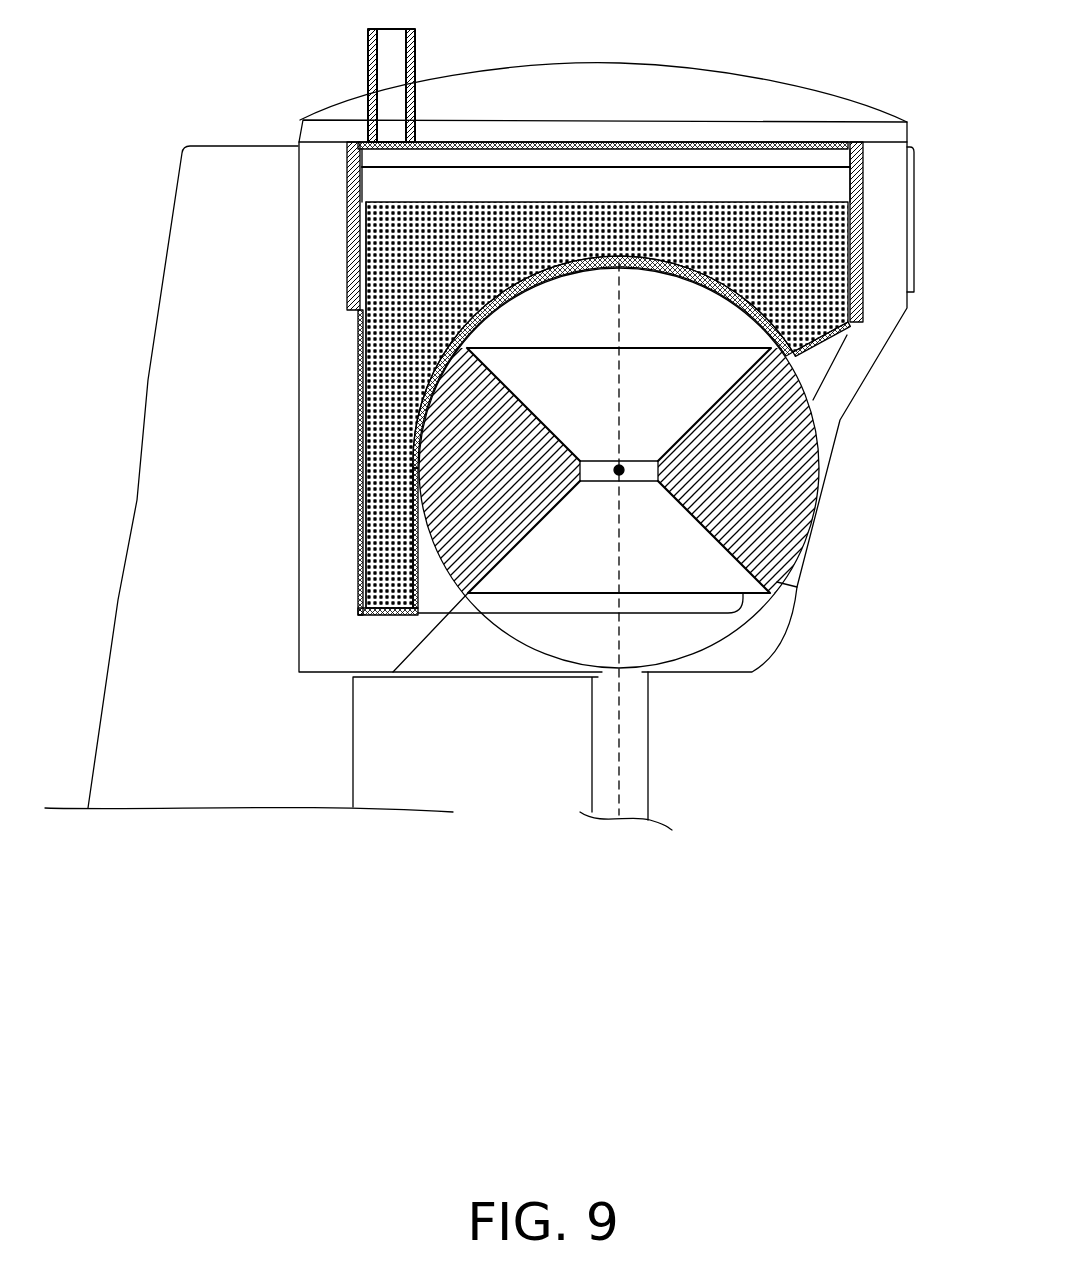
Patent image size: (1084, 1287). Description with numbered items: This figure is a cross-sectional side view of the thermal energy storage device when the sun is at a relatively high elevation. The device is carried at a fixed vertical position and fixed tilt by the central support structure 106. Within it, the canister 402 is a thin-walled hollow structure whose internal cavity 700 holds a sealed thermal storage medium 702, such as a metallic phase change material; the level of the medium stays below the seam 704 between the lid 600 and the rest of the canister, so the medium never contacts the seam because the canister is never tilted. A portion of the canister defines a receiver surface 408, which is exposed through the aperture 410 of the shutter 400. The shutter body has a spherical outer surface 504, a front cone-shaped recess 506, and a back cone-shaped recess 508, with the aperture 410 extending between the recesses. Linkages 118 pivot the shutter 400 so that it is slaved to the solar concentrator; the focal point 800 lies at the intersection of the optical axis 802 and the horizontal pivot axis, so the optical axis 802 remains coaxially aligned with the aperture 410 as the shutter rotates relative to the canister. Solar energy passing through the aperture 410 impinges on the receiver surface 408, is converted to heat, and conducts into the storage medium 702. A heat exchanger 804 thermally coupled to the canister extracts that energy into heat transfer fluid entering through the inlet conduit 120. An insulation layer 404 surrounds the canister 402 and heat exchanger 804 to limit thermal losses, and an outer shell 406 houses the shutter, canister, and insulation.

The central support structure 106 is at (162, 542).
The linkages 118 is at (637, 765).
The inlet conduit 120 is at (368, 55).
The shutter 400 is at (620, 468).
The canister 402 is at (362, 606).
The insulation layer 404 is at (838, 396).
The outer shell 406 is at (915, 212).
The receiver surface 408 is at (508, 292).
The aperture 410 is at (600, 484).
The spherical outer surface 504 is at (432, 548).
The front cone-shaped recess 506 is at (668, 492).
The back cone-shaped recess 508 is at (692, 437).
The lid 600 is at (628, 144).
The internal cavity 700 is at (757, 260).
The thermal storage medium 702 is at (378, 448).
The seam 704 is at (540, 167).
The focal point 800 is at (616, 468).
The optical axis 802 is at (622, 296).
The heat exchanger 804 is at (862, 256).